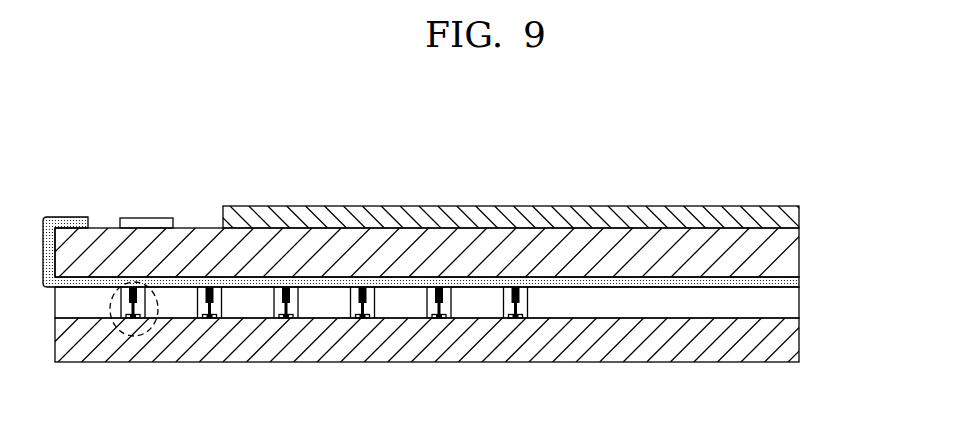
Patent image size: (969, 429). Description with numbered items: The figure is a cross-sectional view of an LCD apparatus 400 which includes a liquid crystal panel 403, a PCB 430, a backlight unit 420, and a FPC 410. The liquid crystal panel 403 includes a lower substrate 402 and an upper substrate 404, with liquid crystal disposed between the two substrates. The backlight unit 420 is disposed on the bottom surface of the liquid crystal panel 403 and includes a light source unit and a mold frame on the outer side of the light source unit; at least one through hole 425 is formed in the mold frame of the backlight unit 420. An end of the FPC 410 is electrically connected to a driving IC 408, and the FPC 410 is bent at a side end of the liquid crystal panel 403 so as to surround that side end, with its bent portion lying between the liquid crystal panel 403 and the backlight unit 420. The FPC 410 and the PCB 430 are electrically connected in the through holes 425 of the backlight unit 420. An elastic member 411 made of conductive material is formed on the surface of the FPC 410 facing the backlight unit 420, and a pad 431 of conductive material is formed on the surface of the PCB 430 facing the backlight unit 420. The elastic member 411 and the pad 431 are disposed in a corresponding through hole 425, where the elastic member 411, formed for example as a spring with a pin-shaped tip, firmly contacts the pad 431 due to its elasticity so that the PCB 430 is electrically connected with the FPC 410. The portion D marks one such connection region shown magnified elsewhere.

The LCD apparatus 400 is at (678, 135).
The liquid crystal panel 403 is at (868, 208).
The lower substrate 402 is at (785, 249).
The upper substrate 404 is at (785, 217).
The driving IC 408 is at (147, 222).
The FPC 410 is at (63, 220).
The elastic member 411 is at (119, 318).
The backlight unit 420 is at (783, 301).
The through hole 425 is at (145, 303).
The PCB 430 is at (783, 327).
The pad 431 is at (139, 318).
The portion D is at (132, 335).